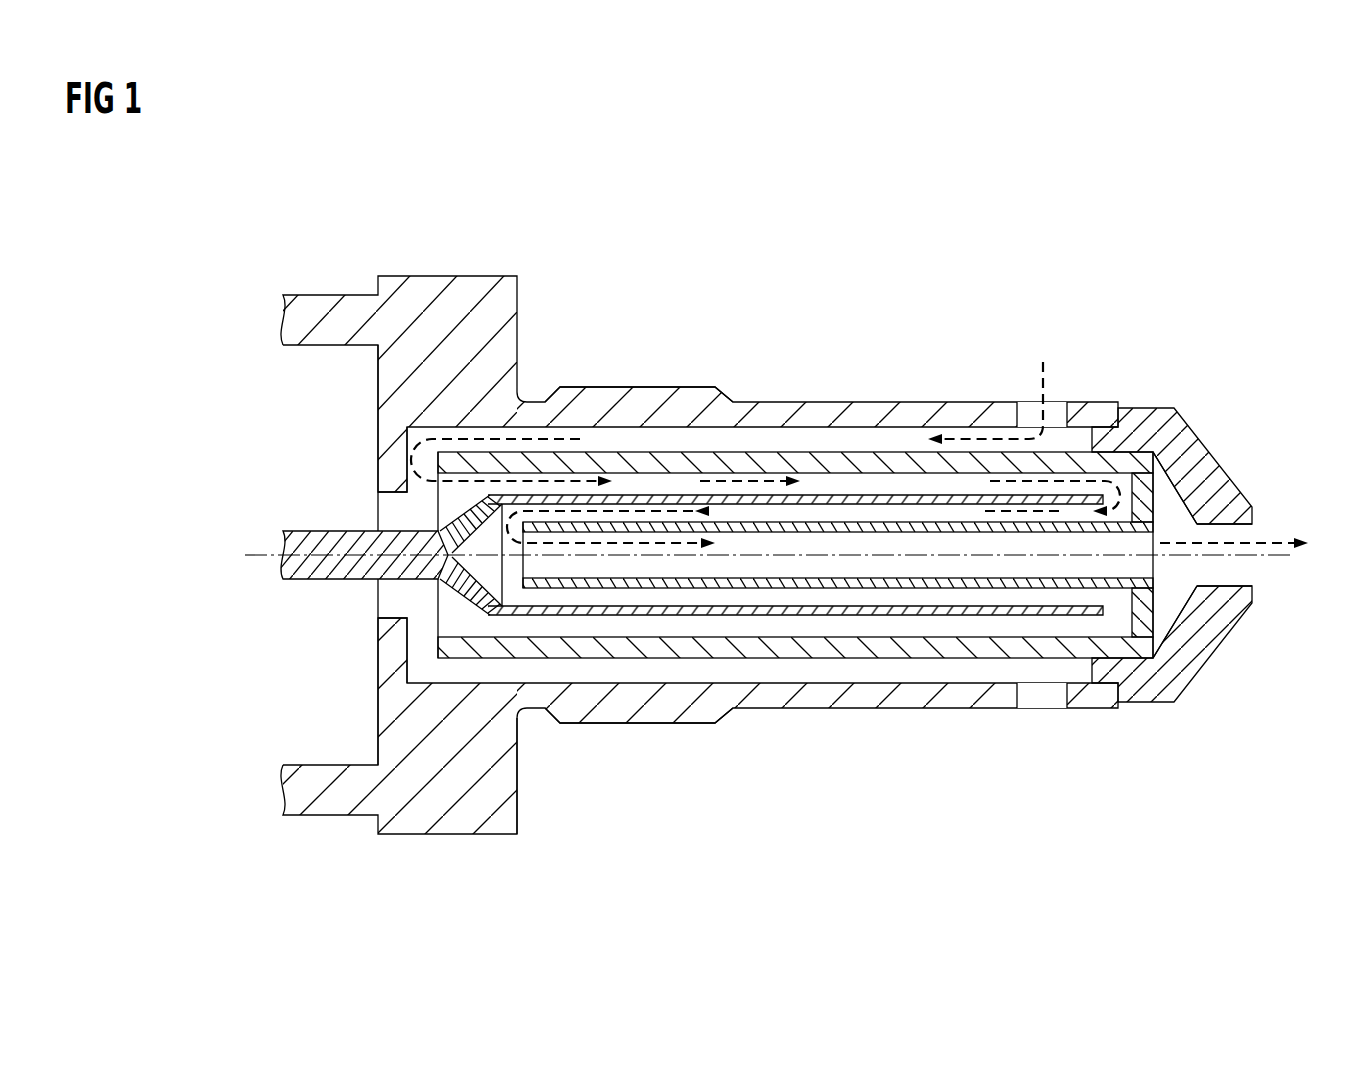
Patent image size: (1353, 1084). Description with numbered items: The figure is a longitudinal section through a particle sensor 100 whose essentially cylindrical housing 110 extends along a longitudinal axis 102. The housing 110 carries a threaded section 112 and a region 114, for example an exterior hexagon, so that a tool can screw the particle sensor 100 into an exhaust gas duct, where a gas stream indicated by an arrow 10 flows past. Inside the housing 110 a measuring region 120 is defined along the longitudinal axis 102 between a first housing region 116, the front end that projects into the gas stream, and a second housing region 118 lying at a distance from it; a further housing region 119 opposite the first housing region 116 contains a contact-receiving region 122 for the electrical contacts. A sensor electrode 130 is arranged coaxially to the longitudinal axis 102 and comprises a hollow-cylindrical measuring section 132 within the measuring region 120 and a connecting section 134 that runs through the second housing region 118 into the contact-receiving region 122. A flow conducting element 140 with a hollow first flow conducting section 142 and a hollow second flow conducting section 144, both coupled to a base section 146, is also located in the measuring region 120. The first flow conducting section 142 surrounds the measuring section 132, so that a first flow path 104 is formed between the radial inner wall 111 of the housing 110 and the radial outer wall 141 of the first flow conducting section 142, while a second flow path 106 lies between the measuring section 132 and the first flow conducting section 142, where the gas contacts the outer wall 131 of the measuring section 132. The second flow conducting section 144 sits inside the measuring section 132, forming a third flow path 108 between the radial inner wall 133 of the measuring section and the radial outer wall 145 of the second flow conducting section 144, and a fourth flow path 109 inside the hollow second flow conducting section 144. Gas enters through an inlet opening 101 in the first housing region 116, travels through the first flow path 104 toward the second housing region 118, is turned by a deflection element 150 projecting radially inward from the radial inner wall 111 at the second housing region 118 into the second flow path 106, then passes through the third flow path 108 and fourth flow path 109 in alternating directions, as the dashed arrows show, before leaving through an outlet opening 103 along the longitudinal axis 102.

The gas stream arrow 10 is at (1333, 302).
The particle sensor 100 is at (198, 213).
The inlet opening 101 is at (1055, 412).
The longitudinal axis 102 is at (265, 525).
The outlet opening 103 is at (1240, 600).
The first flow path 104 is at (865, 439).
The second flow path 106 is at (790, 483).
The third flow path 108 is at (705, 508).
The fourth flow path 109 is at (693, 590).
The housing 110 is at (770, 697).
The radial inner wall 111 is at (628, 686).
The threaded section 112 is at (656, 374).
The region 114 is at (443, 795).
The first housing region 116 is at (1180, 390).
The second housing region 118 is at (534, 810).
The further housing region 119 is at (332, 260).
The measuring region 120 is at (1187, 477).
The contact-receiving region 122 is at (300, 718).
The sensor electrode 130 is at (358, 505).
The outer wall 131 is at (625, 492).
The measuring section 132 is at (843, 502).
The radial inner wall 133 is at (545, 598).
The connecting section 134 is at (320, 565).
The flow conducting element 140 is at (1173, 613).
The radial outer wall 141 is at (933, 453).
The first flow conducting section 142 is at (880, 652).
The second flow conducting section 144 is at (957, 582).
The radial outer wall 145 is at (832, 518).
The base section 146 is at (1140, 480).
The deflection element 150 is at (400, 470).